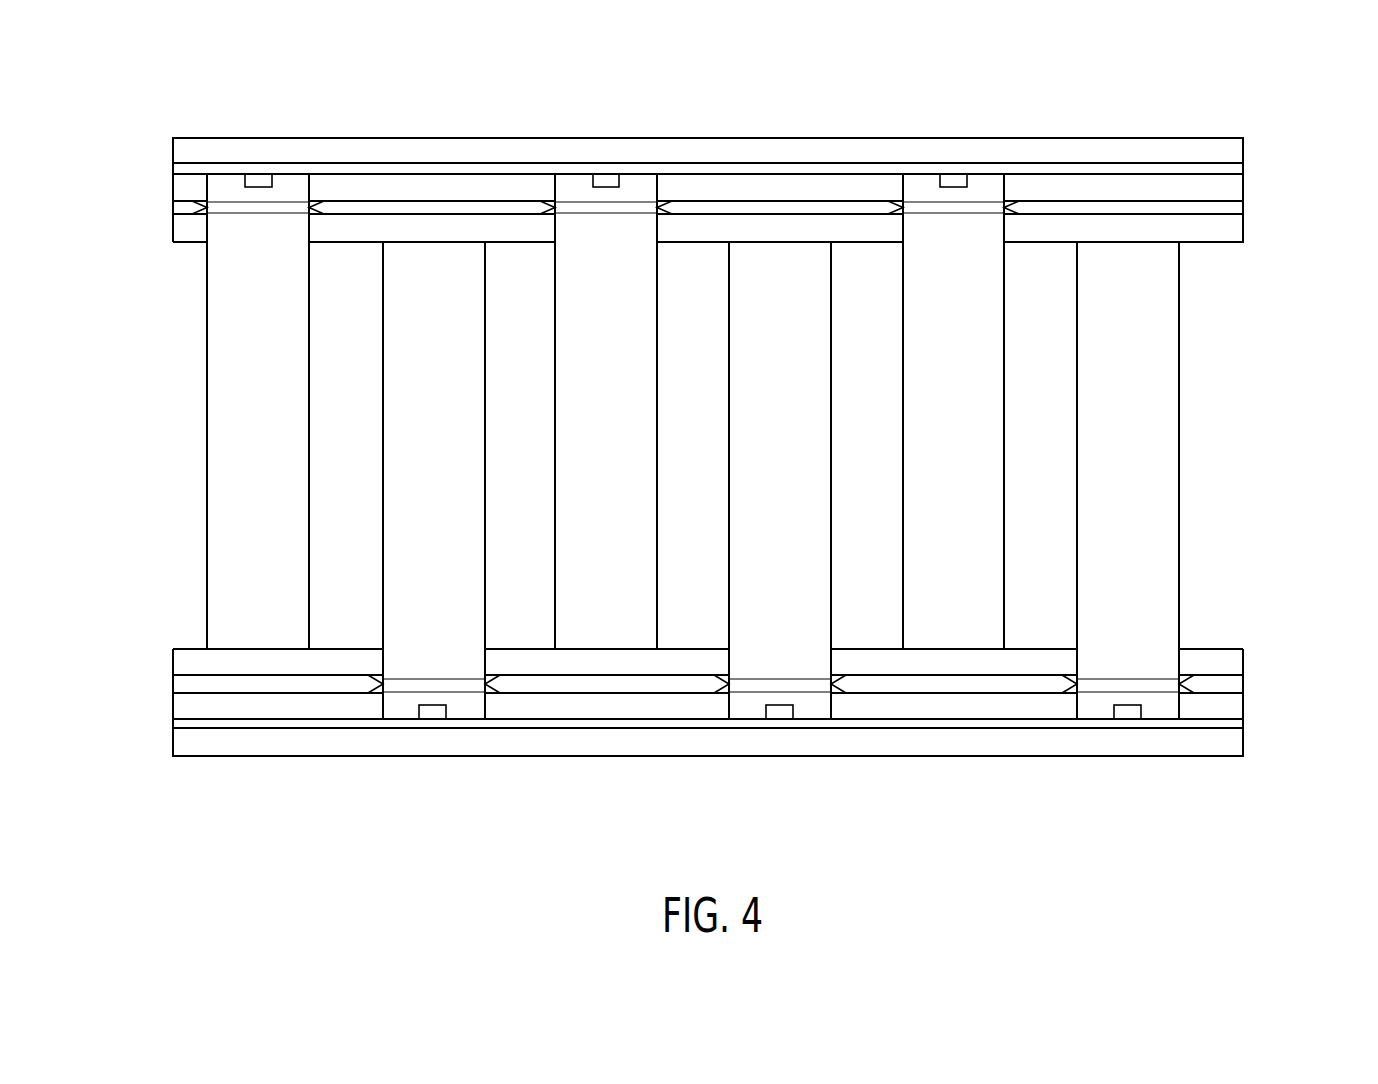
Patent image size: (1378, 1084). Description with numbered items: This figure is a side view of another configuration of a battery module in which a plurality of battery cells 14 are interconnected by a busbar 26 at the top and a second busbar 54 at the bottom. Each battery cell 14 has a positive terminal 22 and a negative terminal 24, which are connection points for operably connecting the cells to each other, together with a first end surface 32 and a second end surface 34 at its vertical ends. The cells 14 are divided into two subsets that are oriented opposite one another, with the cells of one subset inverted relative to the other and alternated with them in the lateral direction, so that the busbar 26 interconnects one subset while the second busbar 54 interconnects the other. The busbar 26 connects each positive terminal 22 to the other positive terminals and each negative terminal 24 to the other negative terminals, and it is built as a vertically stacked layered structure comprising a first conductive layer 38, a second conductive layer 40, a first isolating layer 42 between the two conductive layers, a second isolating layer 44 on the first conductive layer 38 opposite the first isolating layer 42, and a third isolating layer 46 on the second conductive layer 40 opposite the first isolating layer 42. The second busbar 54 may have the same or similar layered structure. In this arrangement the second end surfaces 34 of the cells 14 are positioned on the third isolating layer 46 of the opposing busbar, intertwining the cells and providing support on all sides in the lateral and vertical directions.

The battery cell 14 is at (1192, 521).
The positive terminal 22 is at (263, 178).
The negative terminal 24 is at (283, 208).
The busbar 26 is at (1256, 129).
The first end surface 32 is at (975, 172).
The second end surface 34 is at (1128, 240).
The first conductive layer 38 is at (183, 170).
The second conductive layer 40 is at (188, 208).
The first isolating layer 42 is at (188, 188).
The second isolating layer 44 is at (182, 157).
The third isolating layer 46 is at (183, 233).
The second busbar 54 is at (1275, 645).